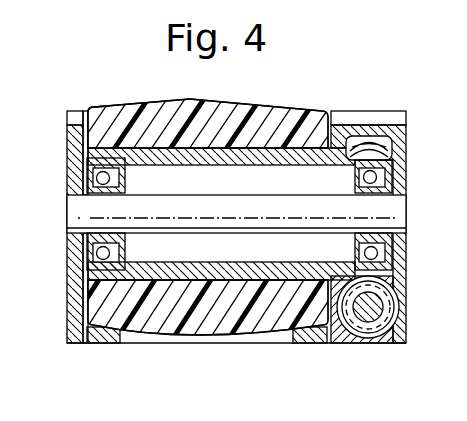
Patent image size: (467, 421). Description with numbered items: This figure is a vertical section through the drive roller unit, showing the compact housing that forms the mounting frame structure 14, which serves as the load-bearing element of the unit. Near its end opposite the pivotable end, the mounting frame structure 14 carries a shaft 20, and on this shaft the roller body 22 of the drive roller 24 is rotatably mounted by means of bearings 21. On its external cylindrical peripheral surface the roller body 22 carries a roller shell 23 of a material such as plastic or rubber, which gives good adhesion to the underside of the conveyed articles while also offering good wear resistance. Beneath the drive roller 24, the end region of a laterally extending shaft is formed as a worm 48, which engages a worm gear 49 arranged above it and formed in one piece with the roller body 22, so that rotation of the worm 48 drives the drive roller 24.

The mounting frame structure 14 is at (72, 307).
The shaft 20 is at (395, 219).
The bearings 21 is at (98, 178).
The roller body 22 is at (283, 152).
The roller shell 23 is at (157, 106).
The drive roller 24 is at (107, 107).
The worm 48 is at (400, 312).
The worm gear 49 is at (367, 141).